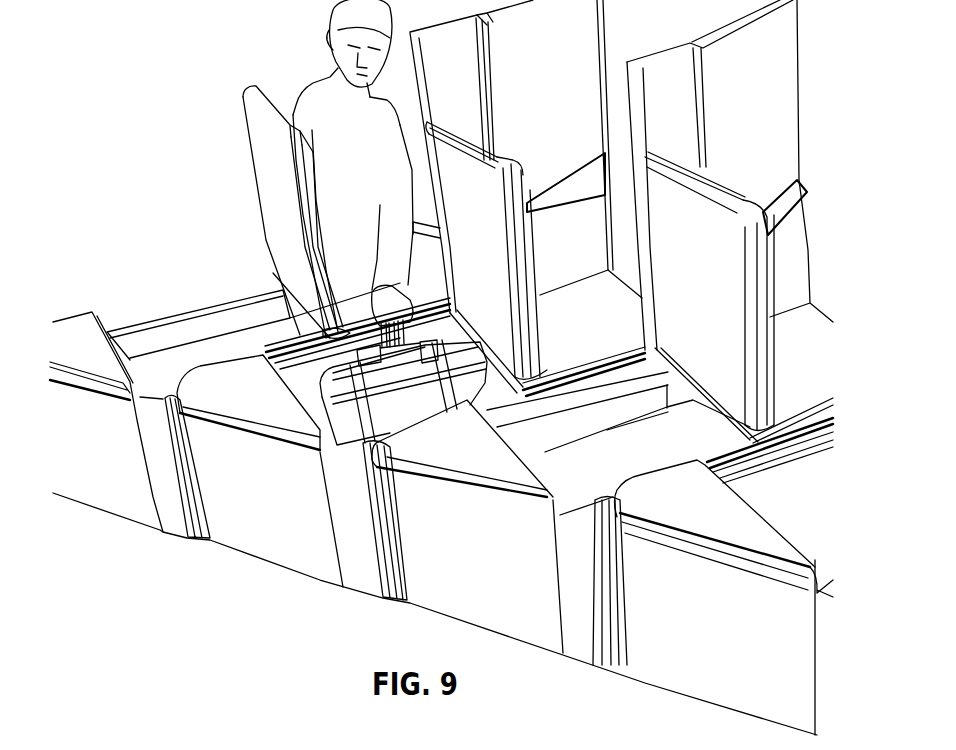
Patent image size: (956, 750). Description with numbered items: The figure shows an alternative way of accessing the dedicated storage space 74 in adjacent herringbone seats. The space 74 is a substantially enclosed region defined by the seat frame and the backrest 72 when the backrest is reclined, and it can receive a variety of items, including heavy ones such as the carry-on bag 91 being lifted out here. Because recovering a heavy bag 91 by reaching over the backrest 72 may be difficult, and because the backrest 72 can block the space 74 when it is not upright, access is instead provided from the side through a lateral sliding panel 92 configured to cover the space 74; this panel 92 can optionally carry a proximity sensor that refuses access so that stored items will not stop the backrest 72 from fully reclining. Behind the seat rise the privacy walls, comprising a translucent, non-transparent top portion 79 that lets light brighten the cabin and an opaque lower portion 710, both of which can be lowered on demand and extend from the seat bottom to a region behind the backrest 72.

The backrest 72 is at (500, 157).
The opaque lower portion 710 is at (300, 357).
The translucent and non-transparent top portion 79 is at (278, 355).
The space 74 is at (303, 390).
The carry-on bag 91 is at (407, 407).
The lateral sliding panel 92 is at (623, 460).